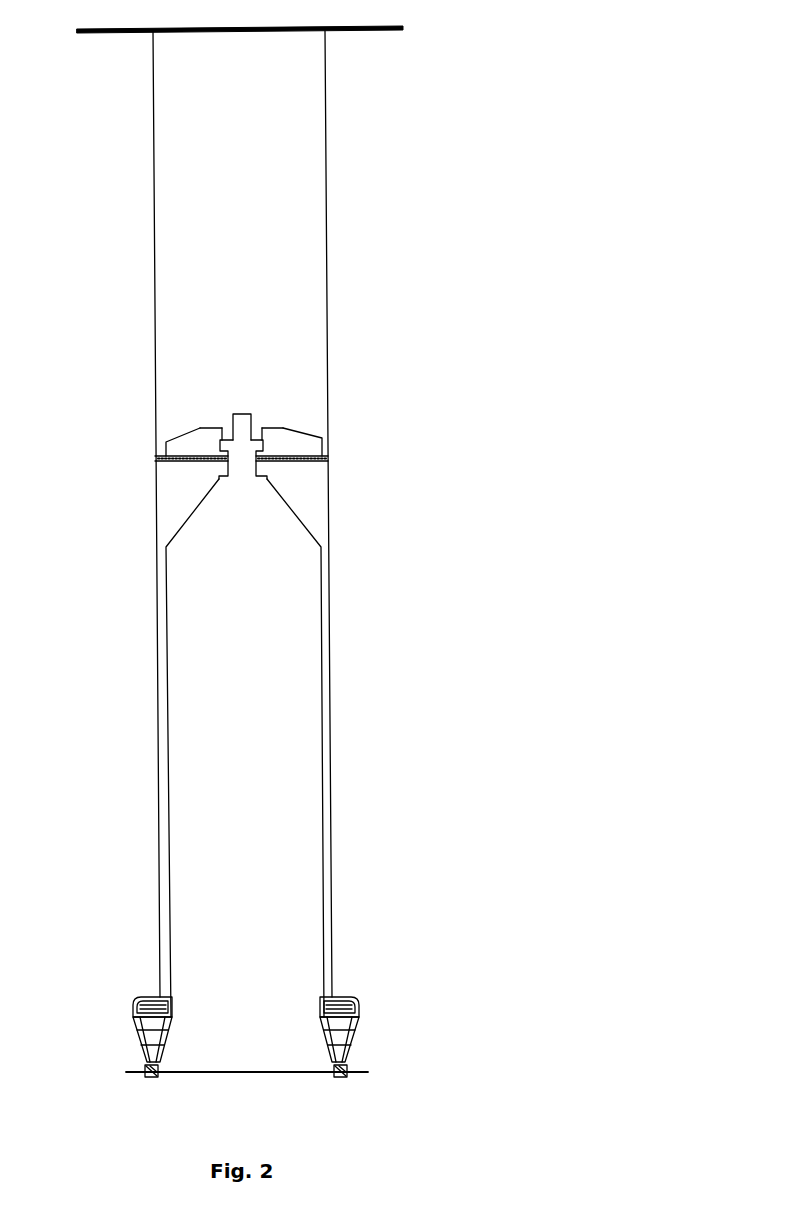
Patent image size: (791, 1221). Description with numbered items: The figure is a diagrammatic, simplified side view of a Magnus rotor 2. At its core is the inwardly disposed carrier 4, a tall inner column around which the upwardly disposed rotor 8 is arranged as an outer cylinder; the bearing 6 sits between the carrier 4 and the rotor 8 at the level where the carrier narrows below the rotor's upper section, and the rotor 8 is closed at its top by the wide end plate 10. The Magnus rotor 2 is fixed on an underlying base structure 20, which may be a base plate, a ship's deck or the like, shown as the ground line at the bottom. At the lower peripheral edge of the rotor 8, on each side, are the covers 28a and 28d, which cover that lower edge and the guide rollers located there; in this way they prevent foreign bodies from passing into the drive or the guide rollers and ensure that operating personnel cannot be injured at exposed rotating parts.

The Magnus rotor 2 is at (110, 340).
The carrier 4 is at (255, 597).
The bearing 6 is at (263, 447).
The rotor 8 is at (327, 213).
The end plate 10 is at (363, 34).
The base structure 20 is at (267, 1103).
The cover 28a is at (360, 1000).
The cover 28d is at (135, 998).